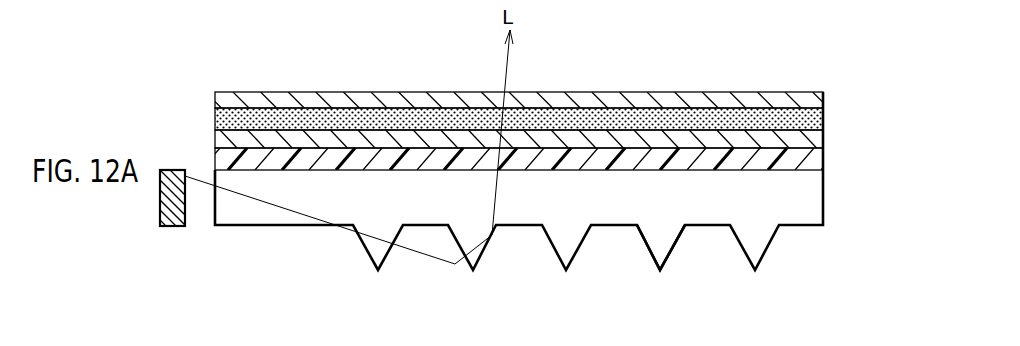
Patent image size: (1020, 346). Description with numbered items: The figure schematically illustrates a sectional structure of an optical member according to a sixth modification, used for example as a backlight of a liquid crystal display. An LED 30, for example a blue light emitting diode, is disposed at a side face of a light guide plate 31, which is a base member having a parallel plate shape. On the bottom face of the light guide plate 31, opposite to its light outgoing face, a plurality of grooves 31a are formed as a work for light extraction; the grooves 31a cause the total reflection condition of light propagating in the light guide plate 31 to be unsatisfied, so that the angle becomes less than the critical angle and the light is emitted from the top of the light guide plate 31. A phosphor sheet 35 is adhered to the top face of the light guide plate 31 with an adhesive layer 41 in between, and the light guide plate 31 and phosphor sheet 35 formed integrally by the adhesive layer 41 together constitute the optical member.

The LED 30 is at (178, 170).
The phosphor sheet 35 is at (823, 92).
The adhesive layer 41 is at (818, 152).
The light guide plate 31 is at (818, 192).
The grooves 31a is at (676, 249).